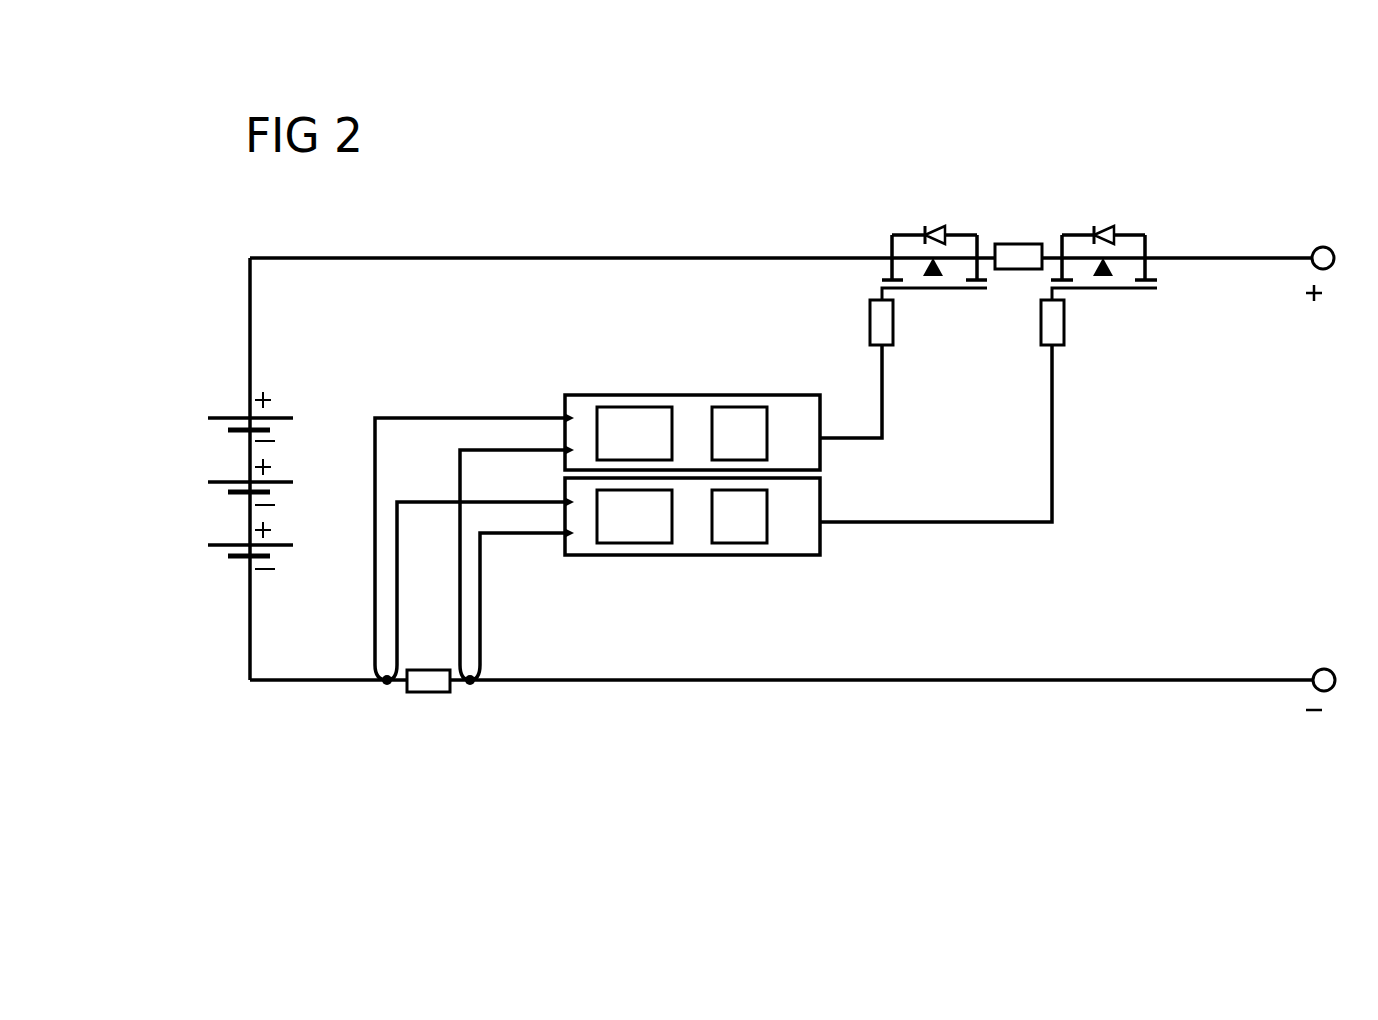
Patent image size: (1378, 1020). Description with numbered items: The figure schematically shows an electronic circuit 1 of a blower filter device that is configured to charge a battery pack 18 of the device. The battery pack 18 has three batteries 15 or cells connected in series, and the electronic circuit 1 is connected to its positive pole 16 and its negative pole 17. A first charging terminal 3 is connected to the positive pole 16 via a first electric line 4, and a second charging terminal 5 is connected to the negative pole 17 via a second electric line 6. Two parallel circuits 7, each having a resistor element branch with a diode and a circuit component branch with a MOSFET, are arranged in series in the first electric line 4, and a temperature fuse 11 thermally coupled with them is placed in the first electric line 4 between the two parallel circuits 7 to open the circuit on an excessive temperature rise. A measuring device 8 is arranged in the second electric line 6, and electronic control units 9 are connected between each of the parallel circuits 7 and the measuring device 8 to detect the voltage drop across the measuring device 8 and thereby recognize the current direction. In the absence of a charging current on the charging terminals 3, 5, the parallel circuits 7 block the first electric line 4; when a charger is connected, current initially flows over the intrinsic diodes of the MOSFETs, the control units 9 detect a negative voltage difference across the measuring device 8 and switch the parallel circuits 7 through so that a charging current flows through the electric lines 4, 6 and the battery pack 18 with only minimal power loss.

The electronic circuit 1 is at (786, 142).
The first charging terminal 3 is at (1325, 250).
The first electric line 4 is at (499, 258).
The second charging terminal 5 is at (1332, 670).
The second electric line 6 is at (296, 682).
The parallel circuit 7 is at (951, 202).
The measuring device 8 is at (417, 692).
The electronic control unit 9 is at (693, 400).
The temperature fuse 11 is at (1017, 242).
The battery 15 is at (254, 511).
The positive pole 16 is at (230, 408).
The negative pole 17 is at (234, 564).
The battery pack 18 is at (217, 470).